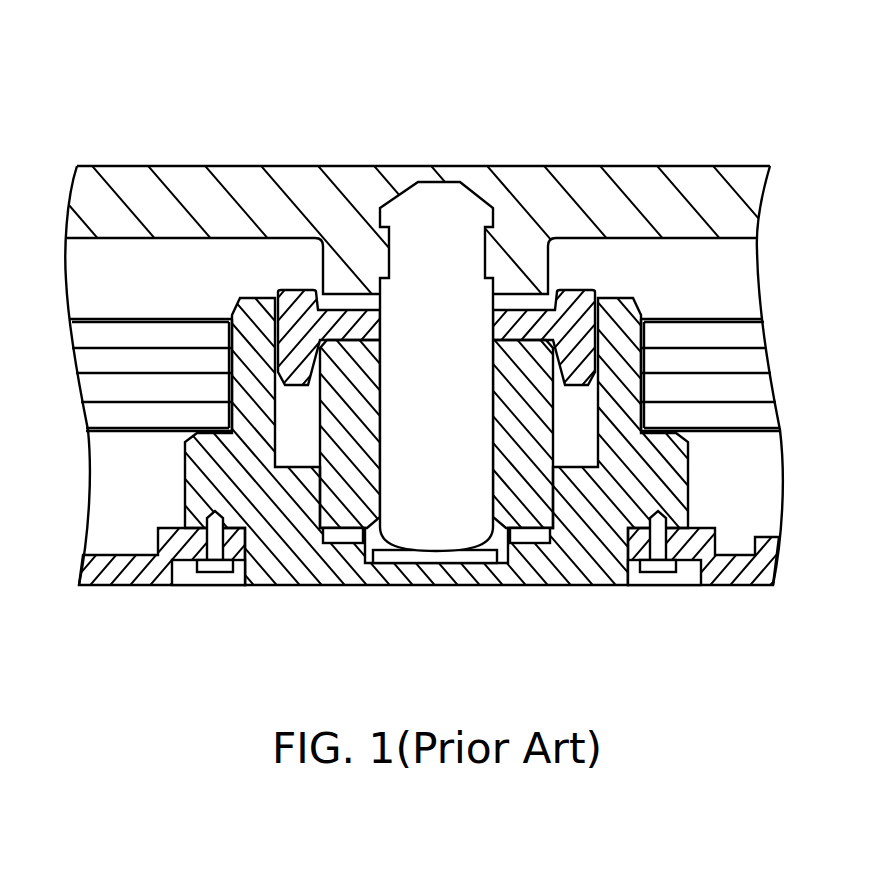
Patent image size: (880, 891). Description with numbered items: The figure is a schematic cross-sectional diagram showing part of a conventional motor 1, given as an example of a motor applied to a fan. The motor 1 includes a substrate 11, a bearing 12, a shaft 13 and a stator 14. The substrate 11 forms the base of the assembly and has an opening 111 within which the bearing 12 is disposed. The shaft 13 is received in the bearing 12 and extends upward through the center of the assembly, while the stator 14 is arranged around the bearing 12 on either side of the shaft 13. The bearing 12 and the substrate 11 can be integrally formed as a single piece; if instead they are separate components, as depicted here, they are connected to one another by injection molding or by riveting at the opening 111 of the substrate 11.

The motor 1 is at (152, 72).
The substrate 11 is at (740, 575).
The opening 111 is at (223, 577).
The bearing 12 is at (587, 538).
The shaft 13 is at (436, 302).
The stator 14 is at (143, 362).